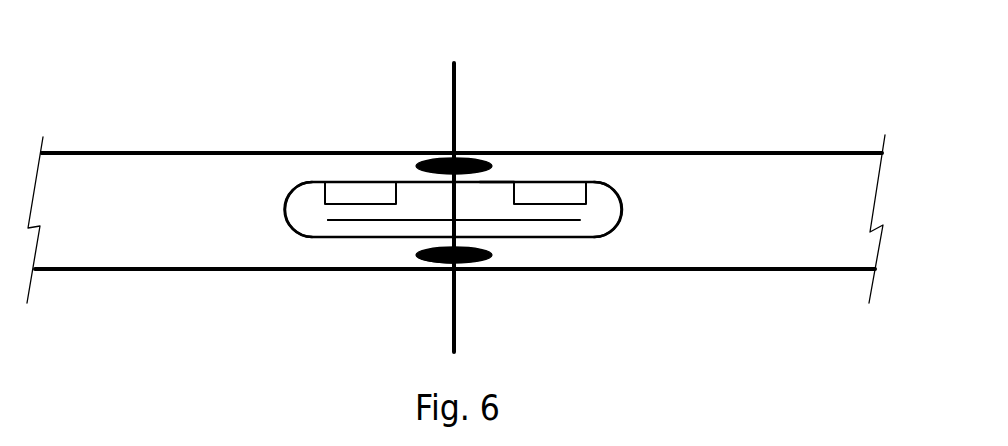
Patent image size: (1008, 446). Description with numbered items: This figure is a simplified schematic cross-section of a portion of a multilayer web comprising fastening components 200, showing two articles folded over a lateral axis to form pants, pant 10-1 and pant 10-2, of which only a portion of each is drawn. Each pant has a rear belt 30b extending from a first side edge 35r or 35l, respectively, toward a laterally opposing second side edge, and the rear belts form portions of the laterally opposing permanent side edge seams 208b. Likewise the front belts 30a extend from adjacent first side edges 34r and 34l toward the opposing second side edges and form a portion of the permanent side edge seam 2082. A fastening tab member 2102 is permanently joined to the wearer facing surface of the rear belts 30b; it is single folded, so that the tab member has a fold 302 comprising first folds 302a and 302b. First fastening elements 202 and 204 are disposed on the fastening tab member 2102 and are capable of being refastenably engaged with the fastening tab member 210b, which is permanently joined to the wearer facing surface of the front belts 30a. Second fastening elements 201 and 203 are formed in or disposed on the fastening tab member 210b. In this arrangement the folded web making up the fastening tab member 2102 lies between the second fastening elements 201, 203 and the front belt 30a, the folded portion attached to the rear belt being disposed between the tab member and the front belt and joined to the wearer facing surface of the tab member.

The pant 10-1 is at (170, 67).
The pant 10-2 is at (753, 112).
The front belt 30a is at (795, 152).
The rear belt 30b is at (110, 269).
The substrate 302 is at (103, 152).
The first fold 302a is at (284, 222).
The first fold 302b is at (620, 228).
The fastening component 200 is at (157, 208).
The second fastening element 201 is at (553, 217).
The first fastening element 202 is at (580, 193).
The second fastening element 203 is at (366, 214).
The first fastening element 204 is at (338, 182).
The connecting segment 2082 is at (498, 182).
The permanent side edge seam 208b is at (417, 254).
The fastening tab member 210b is at (492, 167).
The flexible loop circuit 2102 is at (322, 238).
The first side edge 34r is at (452, 150).
The first side edge 34l is at (456, 152).
The first side edge 35r is at (452, 272).
The first side edge 35l is at (455, 272).